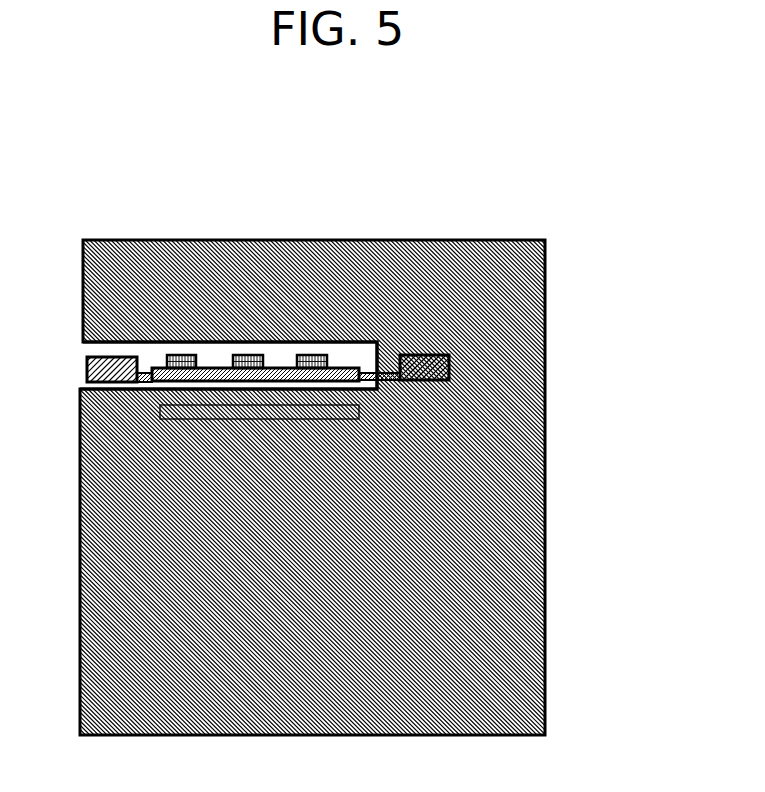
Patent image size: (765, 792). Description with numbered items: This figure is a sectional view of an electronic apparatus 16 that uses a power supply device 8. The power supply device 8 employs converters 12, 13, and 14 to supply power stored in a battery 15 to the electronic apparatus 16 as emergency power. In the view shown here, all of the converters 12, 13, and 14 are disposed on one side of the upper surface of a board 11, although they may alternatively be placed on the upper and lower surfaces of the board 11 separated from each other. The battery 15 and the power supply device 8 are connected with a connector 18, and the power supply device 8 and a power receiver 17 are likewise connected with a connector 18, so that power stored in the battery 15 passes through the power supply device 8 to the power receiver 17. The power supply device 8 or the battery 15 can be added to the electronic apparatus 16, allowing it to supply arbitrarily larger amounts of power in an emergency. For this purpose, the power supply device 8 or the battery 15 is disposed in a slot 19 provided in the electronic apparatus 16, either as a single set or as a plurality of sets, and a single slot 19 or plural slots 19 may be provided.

The power supply device 8 is at (193, 507).
The board 11 is at (151, 369).
The converter 12 is at (178, 356).
The converter 13 is at (252, 355).
The converter 14 is at (313, 355).
The battery 15 is at (90, 358).
The electronic apparatus 16 is at (478, 637).
The power receiver 17 is at (450, 378).
The connector 18 is at (147, 381).
The slot 19 is at (369, 351).